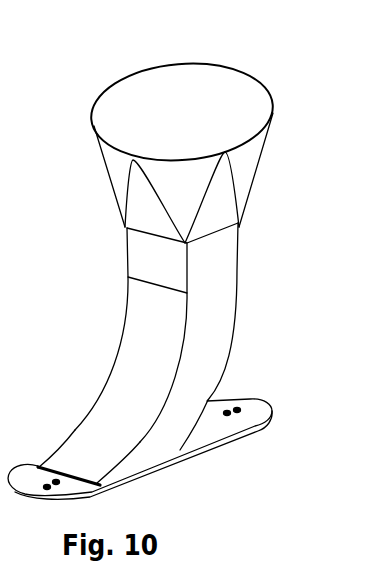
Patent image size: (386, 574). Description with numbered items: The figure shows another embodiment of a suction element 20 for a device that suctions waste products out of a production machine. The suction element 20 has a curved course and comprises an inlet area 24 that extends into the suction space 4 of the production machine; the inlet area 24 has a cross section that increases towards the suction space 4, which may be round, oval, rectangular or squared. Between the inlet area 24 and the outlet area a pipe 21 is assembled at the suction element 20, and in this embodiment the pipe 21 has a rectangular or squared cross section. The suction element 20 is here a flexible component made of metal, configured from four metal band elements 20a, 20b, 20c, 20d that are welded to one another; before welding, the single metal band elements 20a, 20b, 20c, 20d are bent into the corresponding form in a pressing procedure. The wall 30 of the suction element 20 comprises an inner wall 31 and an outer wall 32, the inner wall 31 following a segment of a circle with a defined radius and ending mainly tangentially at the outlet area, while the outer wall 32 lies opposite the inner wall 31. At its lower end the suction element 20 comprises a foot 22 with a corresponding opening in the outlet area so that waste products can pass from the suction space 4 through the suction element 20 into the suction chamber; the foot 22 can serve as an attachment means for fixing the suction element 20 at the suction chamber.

The suction space 4 is at (184, 90).
The suction element 20 is at (282, 100).
The metal band element 20a is at (132, 362).
The metal band element 20b is at (213, 352).
The metal band element 20c is at (246, 313).
The metal band element 20d is at (120, 265).
The pipe 21 is at (237, 253).
The foot 22 is at (250, 430).
The inlet area 24 is at (110, 90).
The wall 30 is at (110, 402).
The inner wall 31 is at (93, 434).
The outer wall 32 is at (212, 396).